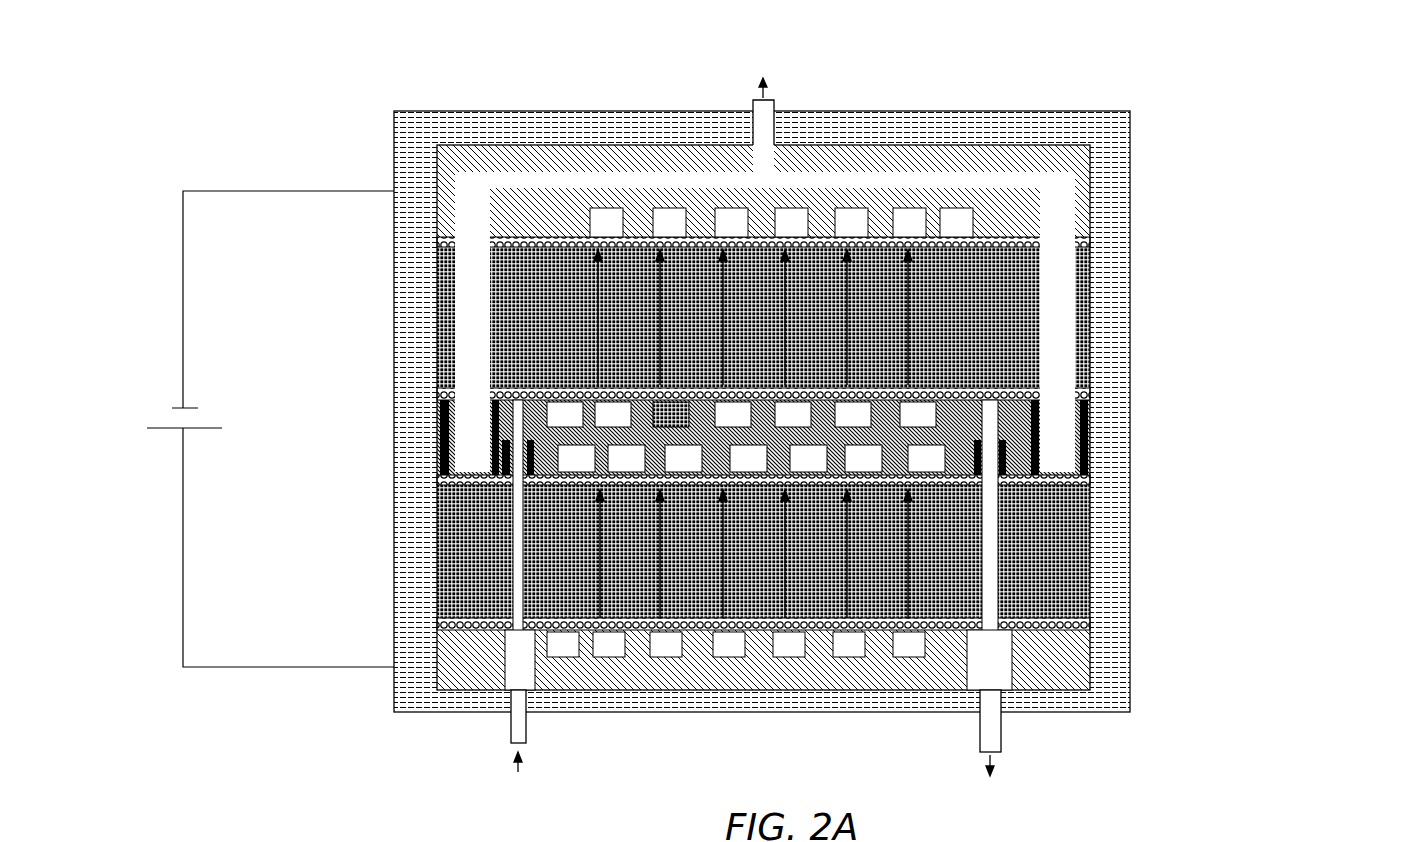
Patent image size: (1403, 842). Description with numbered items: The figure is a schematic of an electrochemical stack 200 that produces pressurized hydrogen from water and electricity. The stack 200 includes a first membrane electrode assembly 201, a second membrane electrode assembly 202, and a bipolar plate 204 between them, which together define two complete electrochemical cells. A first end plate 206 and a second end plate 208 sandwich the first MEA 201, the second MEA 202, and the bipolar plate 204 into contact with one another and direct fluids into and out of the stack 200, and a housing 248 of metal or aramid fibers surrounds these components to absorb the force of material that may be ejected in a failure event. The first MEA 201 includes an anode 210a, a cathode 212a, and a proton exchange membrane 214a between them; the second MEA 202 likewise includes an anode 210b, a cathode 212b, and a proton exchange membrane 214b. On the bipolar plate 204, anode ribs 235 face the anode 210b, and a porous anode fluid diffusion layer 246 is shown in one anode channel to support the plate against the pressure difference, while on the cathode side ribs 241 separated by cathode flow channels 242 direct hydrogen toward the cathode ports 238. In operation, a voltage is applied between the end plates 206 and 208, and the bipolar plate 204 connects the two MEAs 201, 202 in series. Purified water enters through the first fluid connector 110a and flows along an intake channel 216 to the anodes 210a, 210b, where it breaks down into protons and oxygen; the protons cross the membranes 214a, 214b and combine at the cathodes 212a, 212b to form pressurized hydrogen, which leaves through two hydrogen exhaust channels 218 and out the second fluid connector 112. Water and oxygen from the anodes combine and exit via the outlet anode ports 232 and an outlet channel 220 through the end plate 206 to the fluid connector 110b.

The electrochemical stack 200 is at (748, 432).
The housing 248 is at (1060, 128).
The second end plate 208 is at (828, 152).
The hydrogen exhaust channels 218 is at (585, 168).
The second membrane electrode assembly 202 is at (796, 316).
The proton exchange membrane 214b is at (437, 300).
The first membrane electrode assembly 201 is at (787, 551).
The proton exchange membrane 214a is at (437, 528).
The bipolar plate 204 is at (844, 481).
The cathode flow channels 242 is at (925, 458).
The first end plate 206 is at (1092, 662).
The cathode 212b is at (437, 237).
The anode 210b is at (437, 388).
The cathode 212a is at (437, 477).
The anode 210a is at (437, 615).
The second fluid connector 112 is at (776, 101).
The anode ribs 235 is at (770, 390).
The anode fluid diffusion layer 246 is at (676, 420).
The ribs 241 is at (678, 470).
The outlet anode ports 232 is at (520, 390).
The intake channel 216 is at (505, 675).
The outlet channel 220 is at (1017, 660).
The cathode ports 238 is at (445, 432).
The first fluid connector 110a is at (508, 731).
The fluid connector 110b is at (1041, 725).